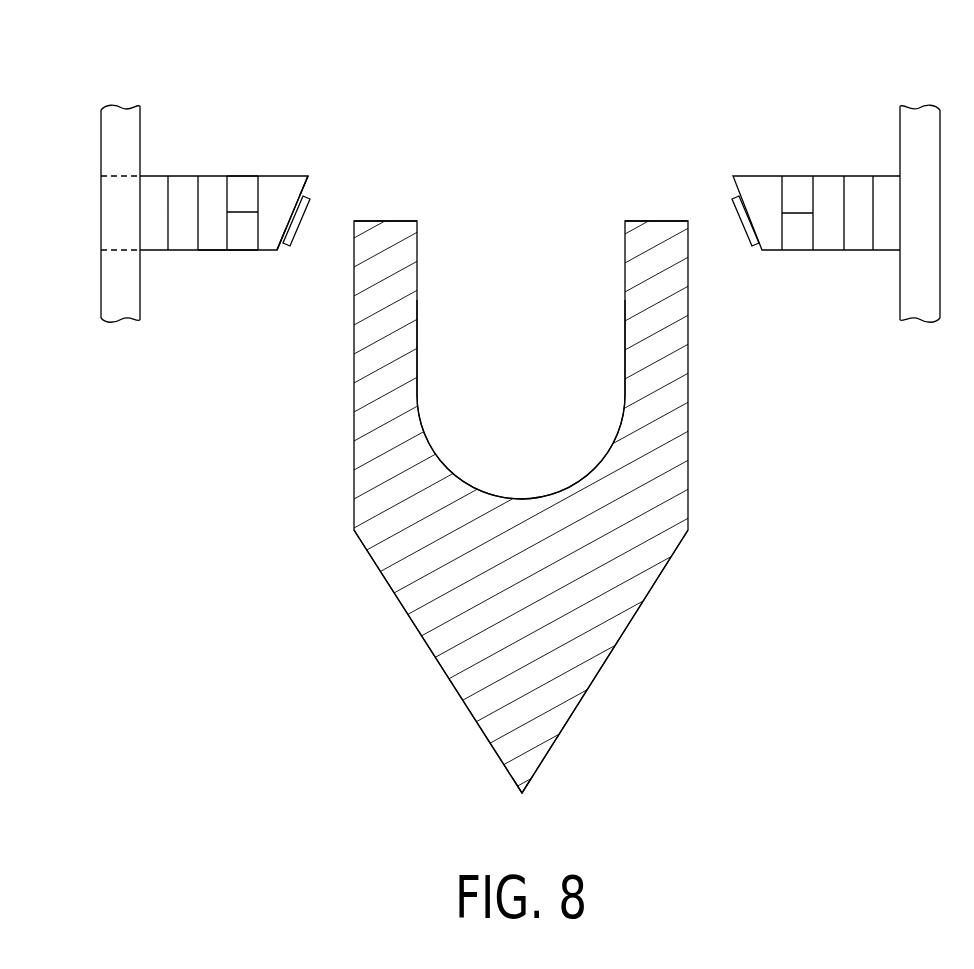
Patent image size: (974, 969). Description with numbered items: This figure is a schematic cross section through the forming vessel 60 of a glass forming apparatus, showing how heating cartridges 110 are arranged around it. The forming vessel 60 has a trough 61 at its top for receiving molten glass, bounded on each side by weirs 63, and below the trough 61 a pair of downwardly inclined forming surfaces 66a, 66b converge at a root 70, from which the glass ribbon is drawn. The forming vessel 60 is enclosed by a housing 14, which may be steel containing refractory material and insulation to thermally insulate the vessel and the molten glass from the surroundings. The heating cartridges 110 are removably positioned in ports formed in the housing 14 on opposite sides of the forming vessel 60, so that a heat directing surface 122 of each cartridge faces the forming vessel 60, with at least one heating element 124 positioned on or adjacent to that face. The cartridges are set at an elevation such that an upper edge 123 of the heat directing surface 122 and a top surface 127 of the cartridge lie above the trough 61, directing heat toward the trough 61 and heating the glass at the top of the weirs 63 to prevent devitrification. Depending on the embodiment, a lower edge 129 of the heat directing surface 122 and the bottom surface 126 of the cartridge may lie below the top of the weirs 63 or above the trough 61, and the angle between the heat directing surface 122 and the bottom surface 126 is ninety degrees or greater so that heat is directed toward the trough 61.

The housing 14 is at (101, 170).
The heating cartridges 110 is at (263, 170).
The top surface of the heating cartridge 127 is at (243, 175).
The upper edge of the heat directing surface 123 is at (308, 175).
The heat directing surface 122 is at (310, 181).
The heating element 124 is at (303, 224).
The bottom surface of the heating cartridge 126 is at (222, 252).
The lower edge of the heat directing surface 129 is at (278, 252).
The forming vessel 60 is at (551, 492).
The trough 61 is at (525, 254).
The weirs 63 is at (402, 220).
The first downwardly inclined forming surface 66a is at (445, 677).
The second downwardly inclined forming surface 66b is at (598, 676).
The root 70 is at (522, 796).